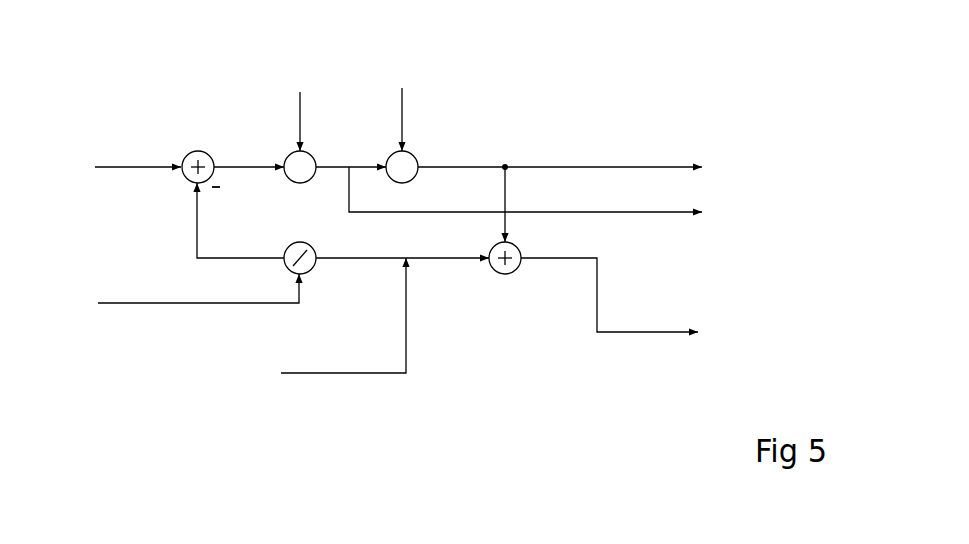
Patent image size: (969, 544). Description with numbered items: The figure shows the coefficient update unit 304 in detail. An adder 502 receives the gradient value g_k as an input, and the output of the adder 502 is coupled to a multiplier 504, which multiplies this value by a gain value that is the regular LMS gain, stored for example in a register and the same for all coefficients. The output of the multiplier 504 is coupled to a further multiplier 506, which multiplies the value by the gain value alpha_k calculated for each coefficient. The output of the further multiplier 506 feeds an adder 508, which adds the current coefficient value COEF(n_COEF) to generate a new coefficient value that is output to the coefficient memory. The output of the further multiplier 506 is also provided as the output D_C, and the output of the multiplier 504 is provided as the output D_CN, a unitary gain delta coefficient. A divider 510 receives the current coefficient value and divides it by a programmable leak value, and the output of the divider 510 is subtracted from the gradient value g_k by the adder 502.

The coefficient update unit 304 is at (106, 66).
The adder 502 is at (210, 153).
The multiplier 504 is at (312, 153).
The further multiplier 506 is at (414, 153).
The adder 508 is at (518, 250).
The divider 510 is at (295, 243).